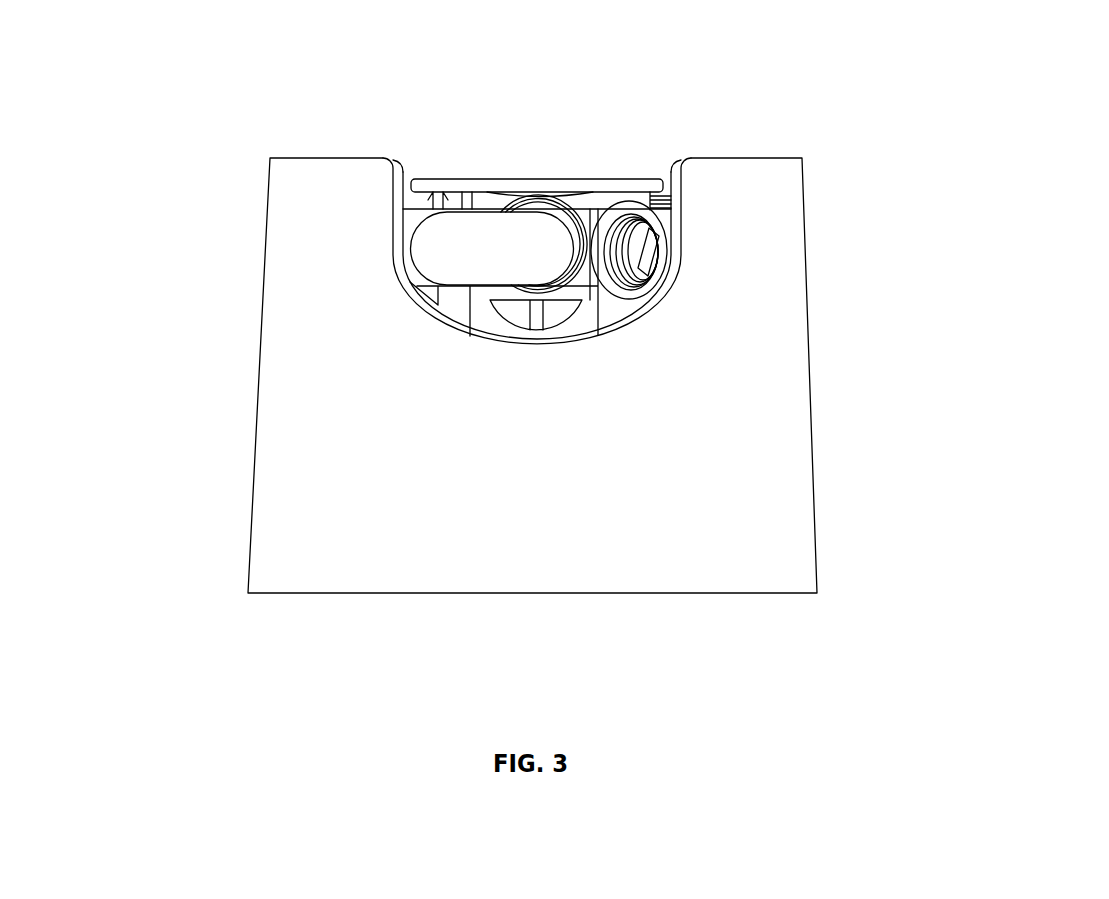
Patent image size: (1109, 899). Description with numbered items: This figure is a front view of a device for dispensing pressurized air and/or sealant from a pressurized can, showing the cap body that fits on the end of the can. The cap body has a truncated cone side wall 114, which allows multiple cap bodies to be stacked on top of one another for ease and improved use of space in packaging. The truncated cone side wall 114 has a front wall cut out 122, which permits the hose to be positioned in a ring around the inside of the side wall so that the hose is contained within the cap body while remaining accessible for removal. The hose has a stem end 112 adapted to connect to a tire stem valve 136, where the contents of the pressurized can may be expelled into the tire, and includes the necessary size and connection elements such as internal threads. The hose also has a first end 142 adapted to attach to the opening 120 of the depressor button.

The stem end 112 is at (655, 185).
The truncated cone side wall 114 is at (257, 423).
The opening 120 is at (425, 180).
The front wall cut out 122 is at (557, 347).
The tire stem valve 136 is at (118, 284).
The first end 142 is at (457, 248).